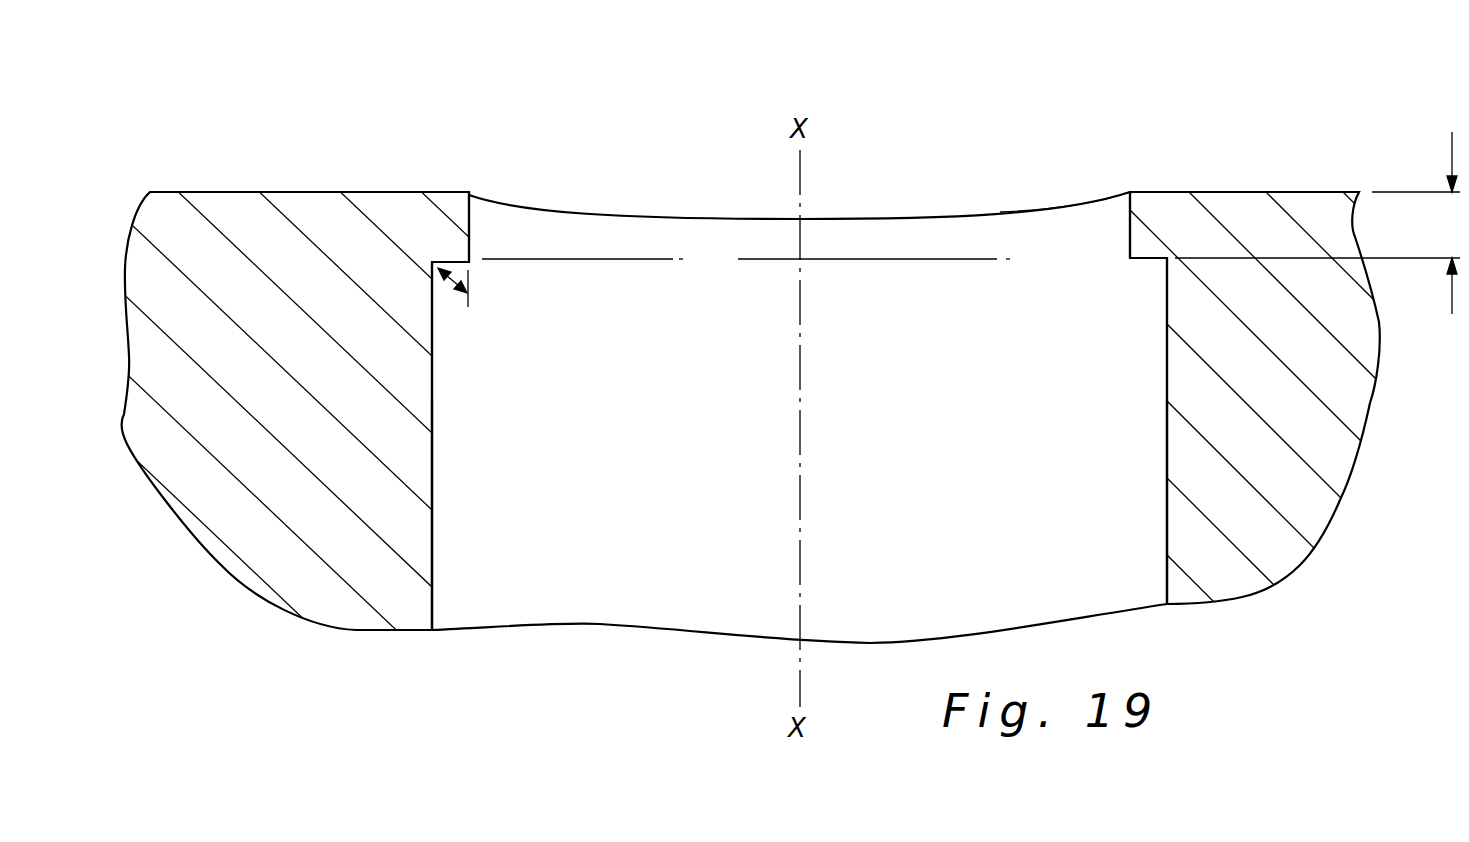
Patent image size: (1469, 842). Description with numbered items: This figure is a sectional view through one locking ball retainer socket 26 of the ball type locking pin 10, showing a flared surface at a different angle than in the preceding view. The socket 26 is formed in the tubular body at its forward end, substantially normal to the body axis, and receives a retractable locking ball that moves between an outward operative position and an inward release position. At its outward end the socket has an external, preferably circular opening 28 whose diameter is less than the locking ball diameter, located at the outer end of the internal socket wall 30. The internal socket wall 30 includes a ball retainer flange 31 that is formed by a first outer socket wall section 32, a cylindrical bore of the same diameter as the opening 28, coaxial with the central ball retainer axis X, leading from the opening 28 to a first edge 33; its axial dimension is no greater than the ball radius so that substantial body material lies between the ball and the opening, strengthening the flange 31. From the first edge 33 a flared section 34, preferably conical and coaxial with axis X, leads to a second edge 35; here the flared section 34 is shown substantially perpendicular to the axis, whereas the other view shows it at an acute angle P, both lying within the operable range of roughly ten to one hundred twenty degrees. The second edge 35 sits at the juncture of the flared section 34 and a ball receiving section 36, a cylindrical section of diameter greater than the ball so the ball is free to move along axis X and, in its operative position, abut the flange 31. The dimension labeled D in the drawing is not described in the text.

The ball type locking pin 10 is at (340, 110).
The locking ball retainer socket 26 is at (927, 212).
The external opening 28 is at (1023, 210).
The internal socket wall 30 is at (470, 433).
The ball retainer flange 31 is at (456, 212).
The first outer socket wall section 32 is at (470, 218).
The first edge 33 is at (469, 263).
The flared section 34 is at (452, 258).
The second edge 35 is at (431, 261).
The ball receiving section 36 is at (433, 510).
The acute angle P is at (442, 276).
The depth D is at (1319, 223).